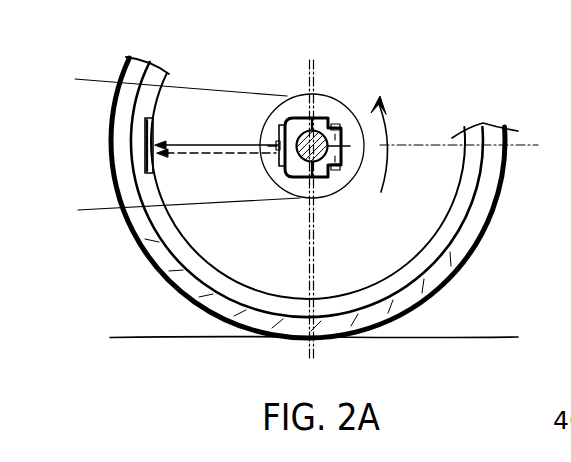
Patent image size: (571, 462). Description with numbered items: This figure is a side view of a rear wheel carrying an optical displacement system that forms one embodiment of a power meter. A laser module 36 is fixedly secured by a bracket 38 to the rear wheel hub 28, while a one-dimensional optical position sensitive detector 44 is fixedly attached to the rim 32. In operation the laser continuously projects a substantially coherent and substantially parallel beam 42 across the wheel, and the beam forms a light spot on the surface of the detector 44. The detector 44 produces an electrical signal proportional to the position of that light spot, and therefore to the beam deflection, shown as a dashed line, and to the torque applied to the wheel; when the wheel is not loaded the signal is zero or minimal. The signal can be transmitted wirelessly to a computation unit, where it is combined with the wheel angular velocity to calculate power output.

The rear wheel hub 28 is at (315, 128).
The rim 32 is at (210, 278).
The laser module 36 is at (276, 142).
The bracket 38 is at (322, 178).
The beam 42 is at (193, 156).
The one-dimensional optical position sensitive detector 44 is at (145, 128).